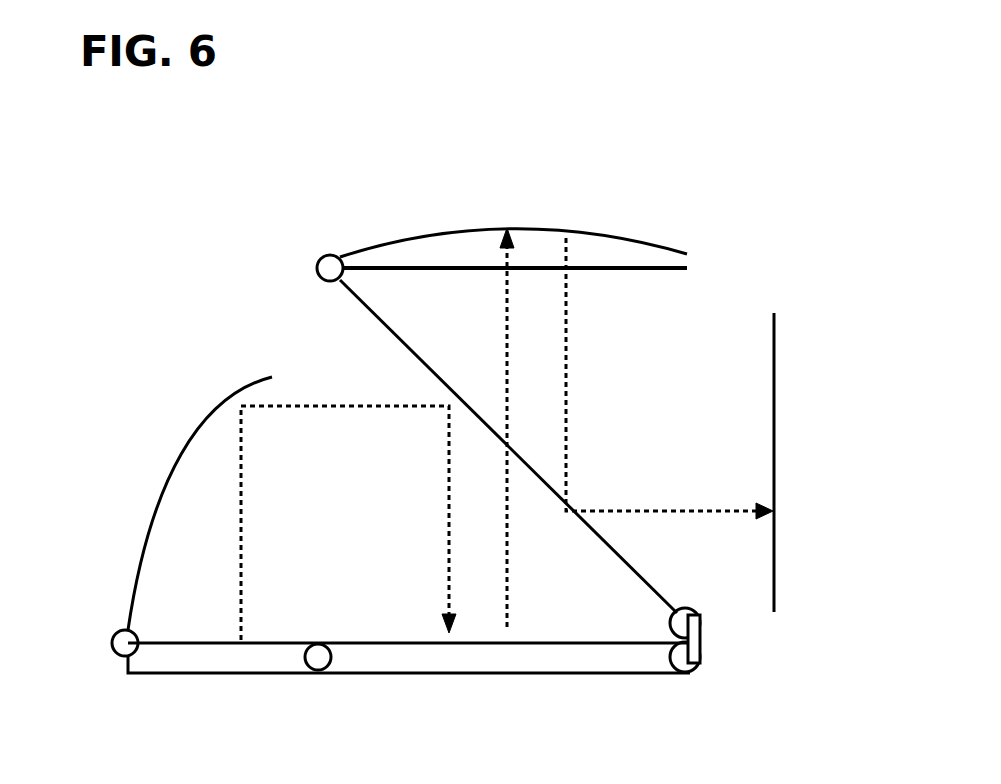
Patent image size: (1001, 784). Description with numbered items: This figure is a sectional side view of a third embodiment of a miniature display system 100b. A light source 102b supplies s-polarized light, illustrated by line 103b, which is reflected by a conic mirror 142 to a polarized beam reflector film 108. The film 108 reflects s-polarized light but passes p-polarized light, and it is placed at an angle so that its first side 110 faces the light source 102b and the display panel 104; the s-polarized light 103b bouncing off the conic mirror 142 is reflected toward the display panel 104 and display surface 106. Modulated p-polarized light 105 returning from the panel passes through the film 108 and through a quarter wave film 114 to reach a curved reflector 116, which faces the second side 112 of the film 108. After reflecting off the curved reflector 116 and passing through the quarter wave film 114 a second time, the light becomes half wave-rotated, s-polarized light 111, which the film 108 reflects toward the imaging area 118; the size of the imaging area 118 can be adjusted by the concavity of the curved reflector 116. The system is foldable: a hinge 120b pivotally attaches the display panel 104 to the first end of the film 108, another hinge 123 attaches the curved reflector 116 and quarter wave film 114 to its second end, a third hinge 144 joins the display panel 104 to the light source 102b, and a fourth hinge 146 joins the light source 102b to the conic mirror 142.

The miniature display system 100b is at (769, 140).
The light source 102b is at (155, 661).
The s-polarized light 103b is at (241, 496).
The display panel 104 is at (635, 657).
The reflected polarized light 105 is at (507, 317).
The display surface 106 is at (383, 642).
The polarized beam reflector film 108 is at (372, 330).
The first side 110 is at (621, 590).
The half wave-rotated modulated light 111 is at (566, 351).
The second side 112 is at (632, 565).
The quarter wave film 114 is at (605, 270).
The curved reflector 116 is at (630, 237).
The imaging area 118 is at (776, 574).
The hinge 120b is at (715, 636).
The hinge 123 is at (318, 267).
The conic mirror 142 is at (152, 545).
The third hinge 144 is at (318, 670).
The fourth hinge 146 is at (113, 636).